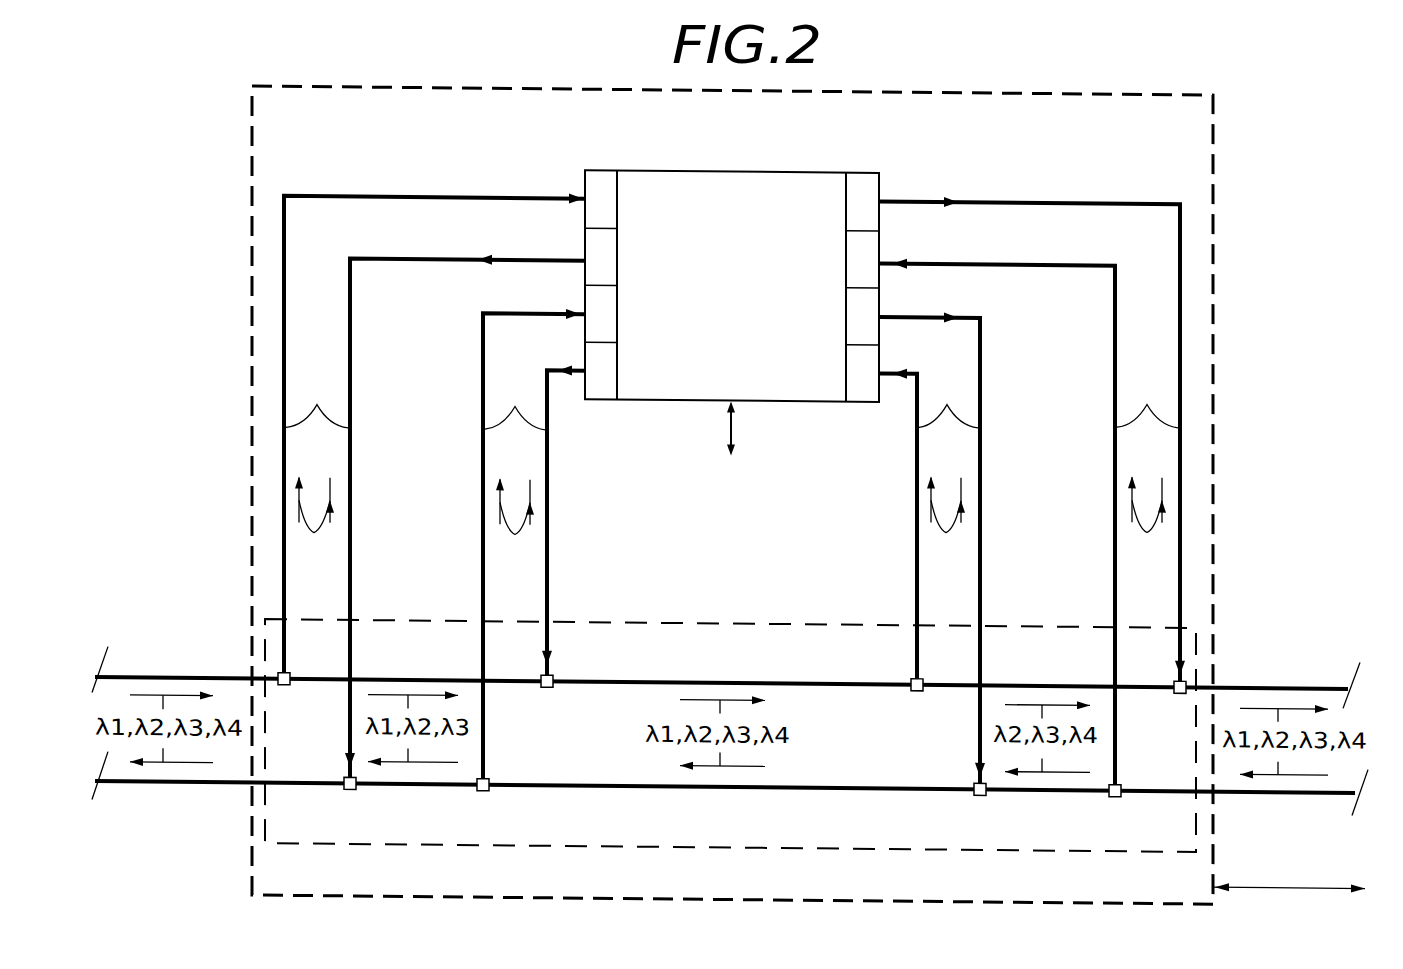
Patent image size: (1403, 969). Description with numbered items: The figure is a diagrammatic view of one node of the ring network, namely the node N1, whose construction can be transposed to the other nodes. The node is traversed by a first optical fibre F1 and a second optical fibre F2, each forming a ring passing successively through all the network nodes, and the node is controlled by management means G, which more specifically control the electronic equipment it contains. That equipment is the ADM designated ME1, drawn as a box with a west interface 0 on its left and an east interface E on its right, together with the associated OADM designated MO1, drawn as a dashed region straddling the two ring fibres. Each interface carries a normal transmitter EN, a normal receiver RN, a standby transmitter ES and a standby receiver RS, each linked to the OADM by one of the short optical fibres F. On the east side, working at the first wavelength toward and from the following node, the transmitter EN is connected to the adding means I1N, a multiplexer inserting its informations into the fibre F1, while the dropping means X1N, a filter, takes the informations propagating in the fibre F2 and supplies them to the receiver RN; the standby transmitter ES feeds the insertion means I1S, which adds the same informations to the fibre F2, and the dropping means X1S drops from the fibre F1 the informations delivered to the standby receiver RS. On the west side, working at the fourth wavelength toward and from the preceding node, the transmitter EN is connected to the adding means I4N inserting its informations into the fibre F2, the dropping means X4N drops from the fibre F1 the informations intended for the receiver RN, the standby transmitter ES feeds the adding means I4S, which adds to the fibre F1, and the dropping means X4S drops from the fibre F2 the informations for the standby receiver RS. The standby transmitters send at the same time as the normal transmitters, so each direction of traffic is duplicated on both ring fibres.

The ADM ME1 is at (748, 160).
The node N1 is at (264, 338).
The OADM MO1 is at (720, 632).
The west interface 0 is at (578, 167).
The east interface E is at (886, 171).
The receiver RN is at (610, 195).
The transmitter EN is at (610, 257).
The standby receiver RS is at (610, 311).
The standby transmitter ES is at (610, 368).
The optical fibre F is at (732, 401).
The dropping means X4N is at (284, 686).
The adding means I4N is at (349, 790).
The adding means I4S is at (552, 672).
The dropping means X4S is at (482, 790).
The dropping means X1S is at (911, 672).
The insertion means I1S is at (980, 790).
The dropping means X1N is at (1115, 790).
The adding means I1N is at (1180, 686).
The first optical fibre F1 is at (1279, 676).
The second optical fibre F2 is at (1279, 789).
The management means G is at (1305, 888).